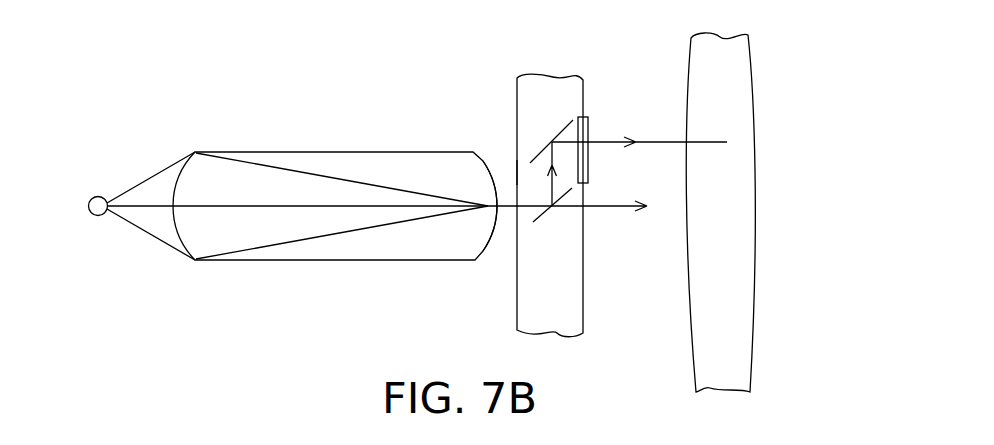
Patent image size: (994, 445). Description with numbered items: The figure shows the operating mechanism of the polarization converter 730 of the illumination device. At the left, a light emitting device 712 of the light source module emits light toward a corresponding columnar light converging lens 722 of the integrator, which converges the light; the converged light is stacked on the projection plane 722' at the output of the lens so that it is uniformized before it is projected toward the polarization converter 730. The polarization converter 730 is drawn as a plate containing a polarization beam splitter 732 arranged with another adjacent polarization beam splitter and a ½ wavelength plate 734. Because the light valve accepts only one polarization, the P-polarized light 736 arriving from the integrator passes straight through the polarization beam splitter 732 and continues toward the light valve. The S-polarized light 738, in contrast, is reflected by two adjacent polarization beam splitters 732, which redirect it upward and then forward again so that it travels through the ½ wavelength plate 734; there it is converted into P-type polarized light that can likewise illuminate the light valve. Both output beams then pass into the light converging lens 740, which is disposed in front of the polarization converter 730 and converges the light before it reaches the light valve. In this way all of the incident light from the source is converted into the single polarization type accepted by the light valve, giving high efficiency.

The light emitting device 712 is at (98, 196).
The columnar light converging lens 722 is at (335, 164).
The projection plane 722' is at (470, 247).
The polarization converter 730 is at (532, 88).
The polarization beam splitter 732 is at (563, 117).
The ½ wavelength plate 734 is at (590, 157).
The P-polarized light 736 is at (576, 207).
The S-polarized light 738 is at (517, 170).
The light converging lens 740 is at (728, 73).